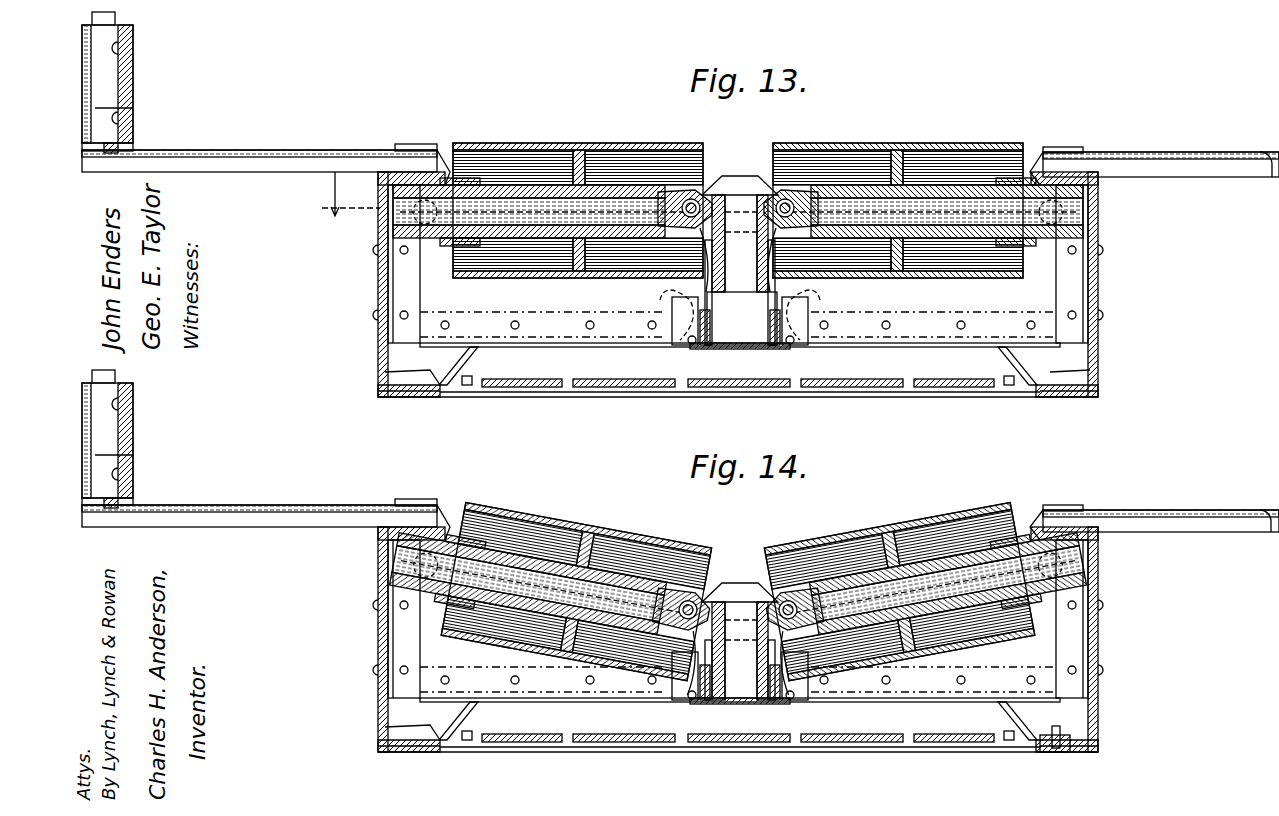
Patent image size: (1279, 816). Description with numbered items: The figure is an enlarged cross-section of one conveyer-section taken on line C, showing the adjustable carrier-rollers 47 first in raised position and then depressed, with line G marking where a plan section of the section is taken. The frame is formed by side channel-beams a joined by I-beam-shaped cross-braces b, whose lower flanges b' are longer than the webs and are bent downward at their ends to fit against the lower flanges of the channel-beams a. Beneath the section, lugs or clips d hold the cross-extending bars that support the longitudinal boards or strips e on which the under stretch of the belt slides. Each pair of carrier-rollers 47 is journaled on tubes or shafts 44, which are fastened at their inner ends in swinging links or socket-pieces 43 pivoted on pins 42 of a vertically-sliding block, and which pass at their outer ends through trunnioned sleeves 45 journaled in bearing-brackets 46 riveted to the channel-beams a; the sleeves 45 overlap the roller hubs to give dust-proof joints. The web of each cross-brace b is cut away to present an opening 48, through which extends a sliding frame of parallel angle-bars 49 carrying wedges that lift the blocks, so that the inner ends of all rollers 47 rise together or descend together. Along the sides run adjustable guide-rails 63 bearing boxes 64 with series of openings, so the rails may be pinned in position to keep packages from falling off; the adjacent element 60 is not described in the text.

In FIG. 13, the pins 42 is at (778, 192).
In FIG. 14, the pins 42 is at (776, 600).
In FIG. 13, the swinging links or socket-pieces 43 is at (685, 241).
In FIG. 14, the swinging links or socket-pieces 43 is at (676, 641).
In FIG. 13, the tubes or shafts 44 is at (546, 211).
In FIG. 14, the tubes or shafts 44 is at (546, 587).
In FIG. 13, the trunnioned sleeves 45 is at (460, 212).
In FIG. 14, the trunnioned sleeves 45 is at (460, 572).
In FIG. 13, the bearing-brackets 46 is at (440, 168).
In FIG. 14, the bearing-brackets 46 is at (440, 523).
In FIG. 13, the carrier-rollers 47 is at (578, 210).
In FIG. 14, the carrier-rollers 47 is at (576, 591).
In FIG. 13, the opening 48 is at (700, 350).
In FIG. 14, the opening 48 is at (775, 710).
In FIG. 13, the angle-bars 49 is at (708, 350).
In FIG. 14, the angle-bars 49 is at (708, 706).
In FIG. 13, the arm 60 is at (263, 140).
In FIG. 14, the arm 60 is at (273, 495).
In FIG. 13, the guide-rails 63 is at (133, 70).
In FIG. 14, the guide-rails 63 is at (133, 408).
In FIG. 13, the boxes 64 is at (133, 108).
In FIG. 14, the boxes 64 is at (133, 452).
In FIG. 13, the channel-beams a is at (378, 288).
In FIG. 14, the channel-beams a is at (378, 626).
In FIG. 13, the cross-braces b is at (740, 379).
In FIG. 14, the cross-braces b is at (740, 731).
In FIG. 13, the lower flanges b' is at (737, 392).
In FIG. 14, the lower flanges b' is at (711, 749).
In FIG. 13, the section line C is at (570, 392).
In FIG. 14, the section line C is at (800, 748).
In FIG. 14, the lugs or clips d is at (1075, 752).
In FIG. 13, the boards or strips e is at (778, 388).
In FIG. 14, the boards or strips e is at (690, 728).
In FIG. 13, the section line G is at (331, 200).